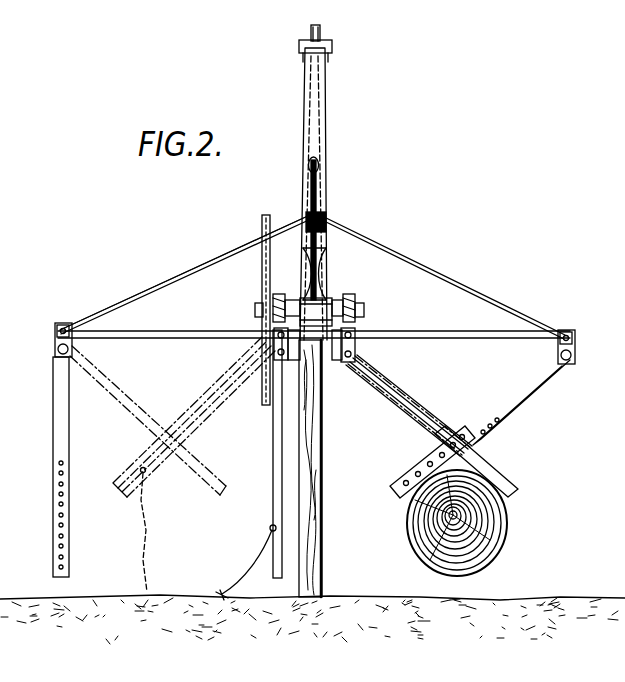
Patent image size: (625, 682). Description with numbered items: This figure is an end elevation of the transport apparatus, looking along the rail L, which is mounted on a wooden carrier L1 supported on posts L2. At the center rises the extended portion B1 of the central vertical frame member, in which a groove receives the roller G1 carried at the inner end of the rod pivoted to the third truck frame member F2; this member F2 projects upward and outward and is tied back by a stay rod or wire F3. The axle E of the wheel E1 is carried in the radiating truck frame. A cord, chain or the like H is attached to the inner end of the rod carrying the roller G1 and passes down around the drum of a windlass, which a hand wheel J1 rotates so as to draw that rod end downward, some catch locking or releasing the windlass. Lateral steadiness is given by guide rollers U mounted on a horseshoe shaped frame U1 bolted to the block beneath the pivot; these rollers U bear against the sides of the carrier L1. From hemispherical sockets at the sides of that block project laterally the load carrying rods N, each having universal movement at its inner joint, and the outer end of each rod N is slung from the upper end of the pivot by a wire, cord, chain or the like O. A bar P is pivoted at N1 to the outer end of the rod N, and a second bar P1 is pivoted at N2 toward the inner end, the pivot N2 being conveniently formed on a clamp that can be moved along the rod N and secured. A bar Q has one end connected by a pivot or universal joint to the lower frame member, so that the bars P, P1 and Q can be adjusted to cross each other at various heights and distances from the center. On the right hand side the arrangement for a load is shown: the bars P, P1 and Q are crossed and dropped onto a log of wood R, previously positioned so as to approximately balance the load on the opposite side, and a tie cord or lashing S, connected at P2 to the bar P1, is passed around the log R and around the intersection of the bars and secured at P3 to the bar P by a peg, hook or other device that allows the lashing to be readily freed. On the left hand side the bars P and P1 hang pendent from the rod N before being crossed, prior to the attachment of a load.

The cord chain or the like H is at (305, 88).
The roller G1 is at (300, 45).
The extended portion of central vertical member B1 is at (330, 50).
The third member of truck frame F2 is at (317, 197).
The stay rod or wire F3 is at (372, 241).
The wheel E1 is at (324, 292).
The axle E is at (334, 304).
The hand wheel J1 is at (263, 282).
The load carrying rod N is at (185, 331).
The pivot N1 is at (570, 366).
The pivot N2 is at (338, 362).
The rail L is at (355, 328).
The wooden carrier L1 is at (358, 341).
The posts L2 is at (322, 514).
The bar P is at (62, 415).
The second bar P1 is at (422, 415).
The lashing connection point P2 is at (494, 473).
The lashing securing point P3 is at (200, 572).
The bar Q is at (196, 414).
The guide rollers U is at (189, 412).
The horseshoe shaped frame U1 is at (194, 469).
The log of wood R is at (417, 553).
The tie cord or lashing S is at (412, 525).
The wire cord chain or the like O is at (176, 277).